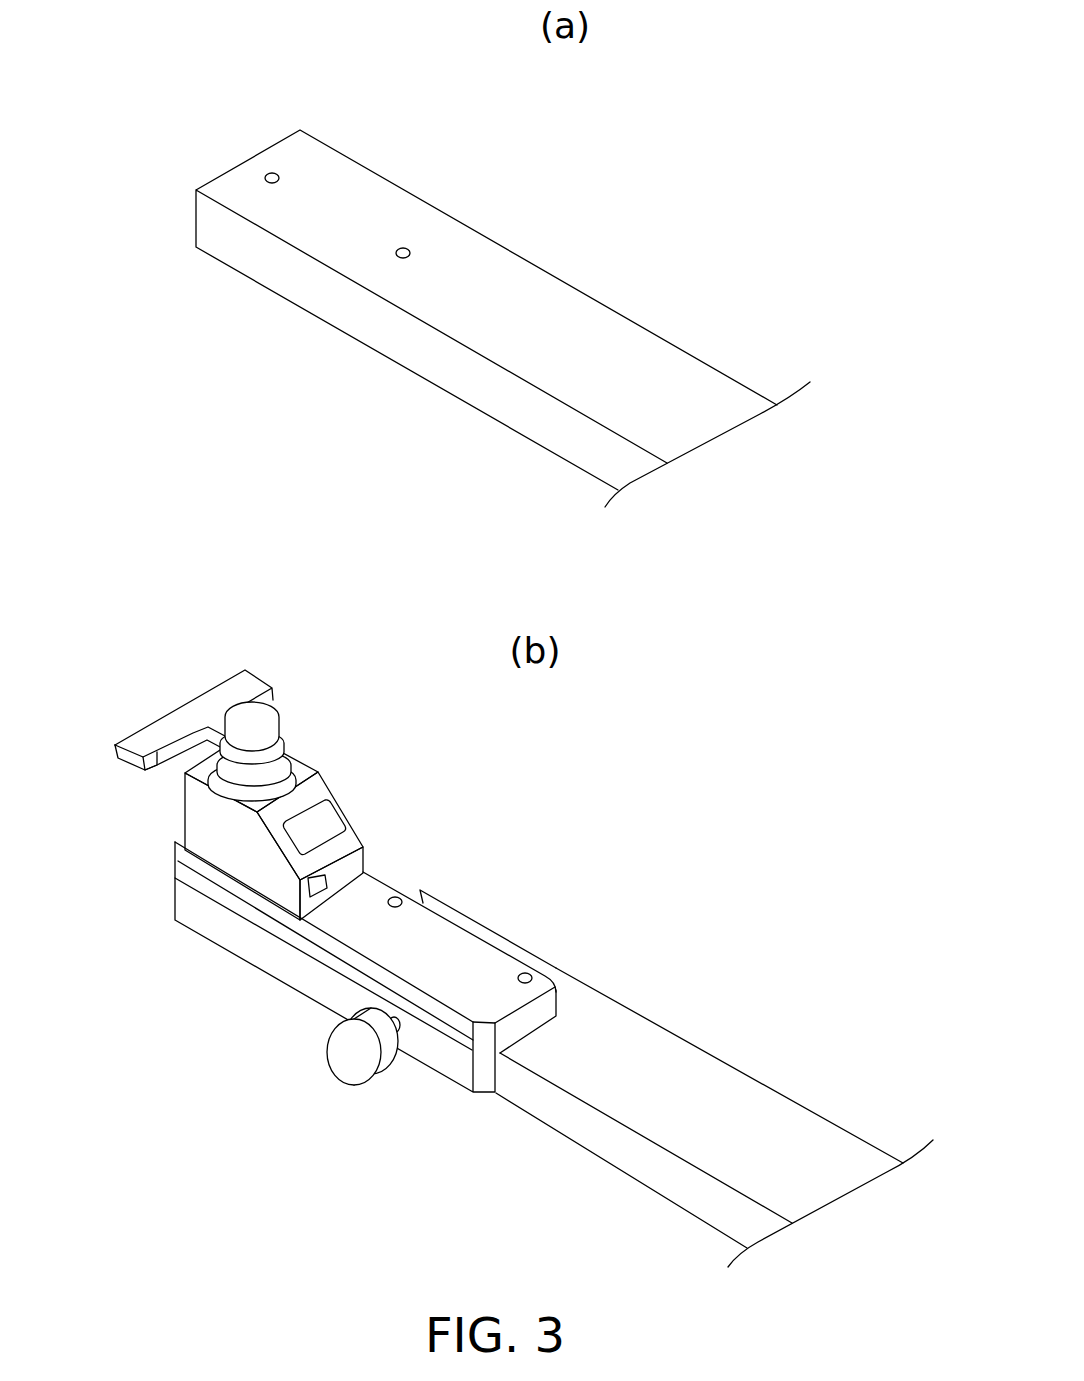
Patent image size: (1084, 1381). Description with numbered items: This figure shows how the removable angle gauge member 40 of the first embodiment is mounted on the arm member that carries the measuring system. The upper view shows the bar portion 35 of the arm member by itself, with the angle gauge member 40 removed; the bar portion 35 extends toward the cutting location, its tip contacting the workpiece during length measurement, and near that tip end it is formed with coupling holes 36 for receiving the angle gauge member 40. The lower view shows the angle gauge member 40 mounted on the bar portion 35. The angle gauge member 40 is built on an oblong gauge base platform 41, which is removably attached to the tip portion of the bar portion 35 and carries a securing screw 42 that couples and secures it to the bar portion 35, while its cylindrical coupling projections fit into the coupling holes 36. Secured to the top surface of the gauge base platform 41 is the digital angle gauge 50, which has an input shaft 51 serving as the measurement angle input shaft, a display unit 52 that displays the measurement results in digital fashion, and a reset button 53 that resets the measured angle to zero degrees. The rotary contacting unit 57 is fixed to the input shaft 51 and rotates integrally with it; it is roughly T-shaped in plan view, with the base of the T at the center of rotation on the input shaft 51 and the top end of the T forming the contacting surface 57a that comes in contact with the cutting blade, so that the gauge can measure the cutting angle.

The bar portion 35 is at (533, 258).
The coupling holes 36 is at (273, 172).
The angle gauge member 40 is at (267, 977).
The gauge base platform 41 is at (560, 1002).
The securing screw 42 is at (350, 1067).
The digital angle gauge 50 is at (180, 817).
The input shaft 51 is at (262, 718).
The display unit 52 is at (318, 820).
The reset button 53 is at (327, 883).
The rotary contacting unit 57 is at (260, 680).
The contacting surface 57a is at (162, 717).